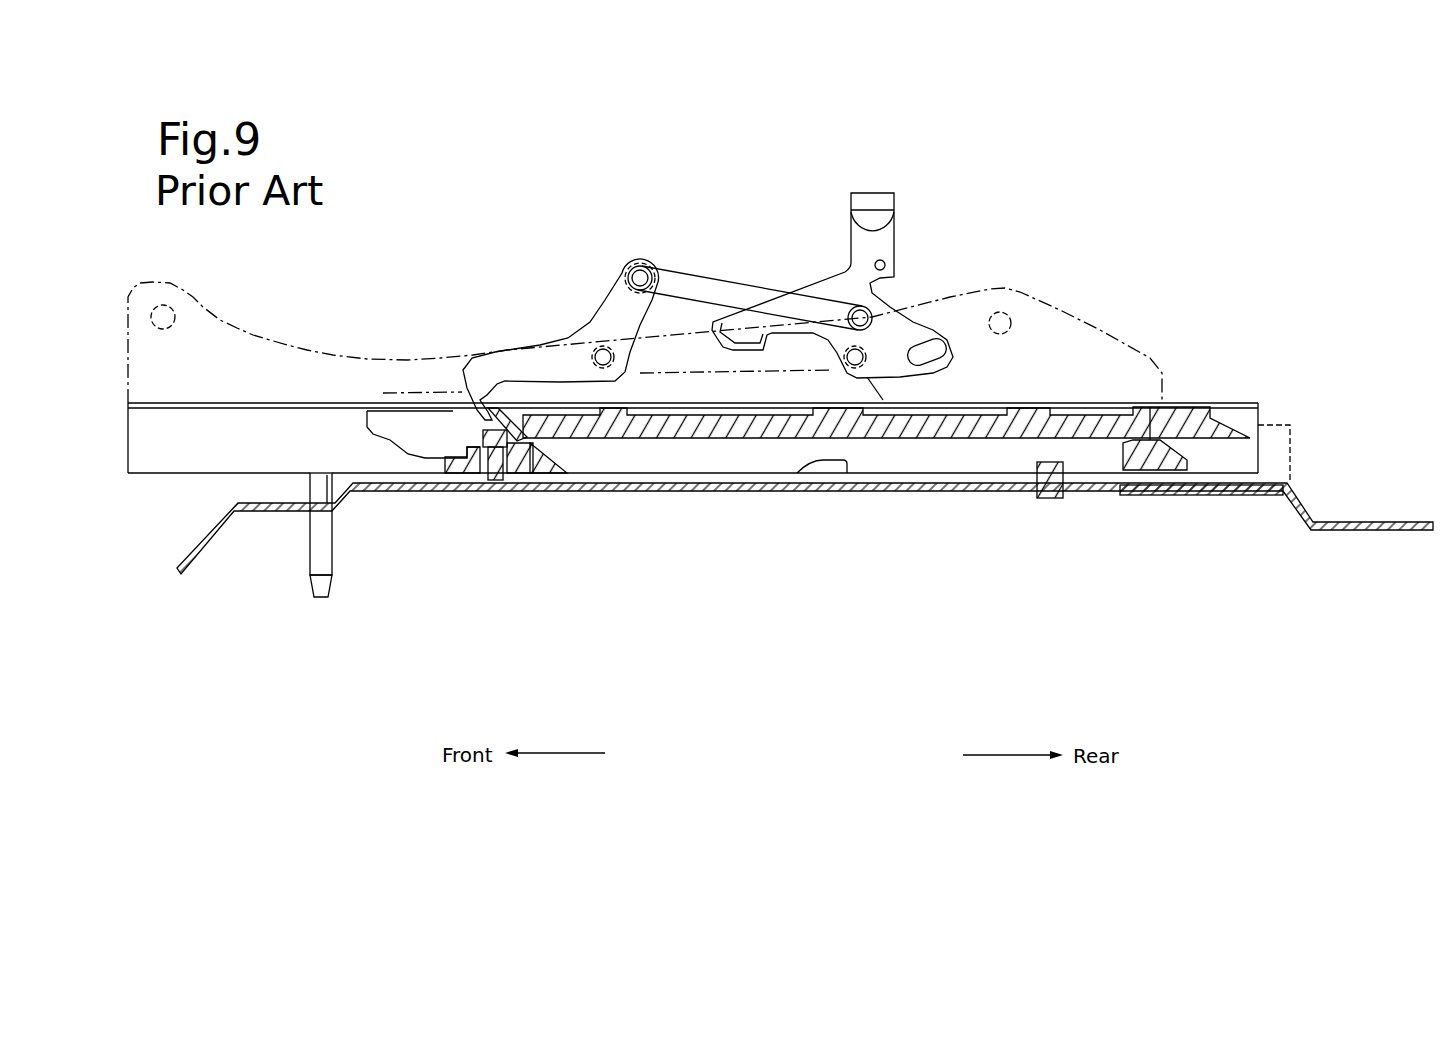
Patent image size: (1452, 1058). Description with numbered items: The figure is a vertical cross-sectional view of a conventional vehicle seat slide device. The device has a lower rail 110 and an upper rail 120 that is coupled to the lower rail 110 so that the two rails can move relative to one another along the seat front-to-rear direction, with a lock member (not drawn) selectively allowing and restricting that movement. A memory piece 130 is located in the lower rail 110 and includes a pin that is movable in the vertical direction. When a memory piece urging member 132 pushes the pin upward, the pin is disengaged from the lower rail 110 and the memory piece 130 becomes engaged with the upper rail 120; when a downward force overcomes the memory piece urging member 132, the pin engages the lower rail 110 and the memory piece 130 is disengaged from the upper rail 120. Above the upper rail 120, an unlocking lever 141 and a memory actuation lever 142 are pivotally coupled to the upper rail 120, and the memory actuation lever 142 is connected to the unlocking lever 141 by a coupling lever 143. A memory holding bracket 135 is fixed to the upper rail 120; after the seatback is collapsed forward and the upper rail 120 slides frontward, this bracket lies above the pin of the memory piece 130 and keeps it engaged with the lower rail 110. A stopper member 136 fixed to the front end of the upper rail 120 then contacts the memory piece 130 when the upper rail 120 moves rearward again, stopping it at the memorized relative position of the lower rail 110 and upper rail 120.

The lower rail 110 is at (1283, 418).
The upper rail 120 is at (1249, 394).
The memory piece 130 is at (449, 444).
The memory piece urging member 132 is at (522, 490).
The memory holding bracket 135 is at (623, 452).
The stopper member 136 is at (382, 447).
The unlocking lever 141 is at (903, 235).
The memory actuation lever 142 is at (596, 288).
The coupling lever 143 is at (705, 271).